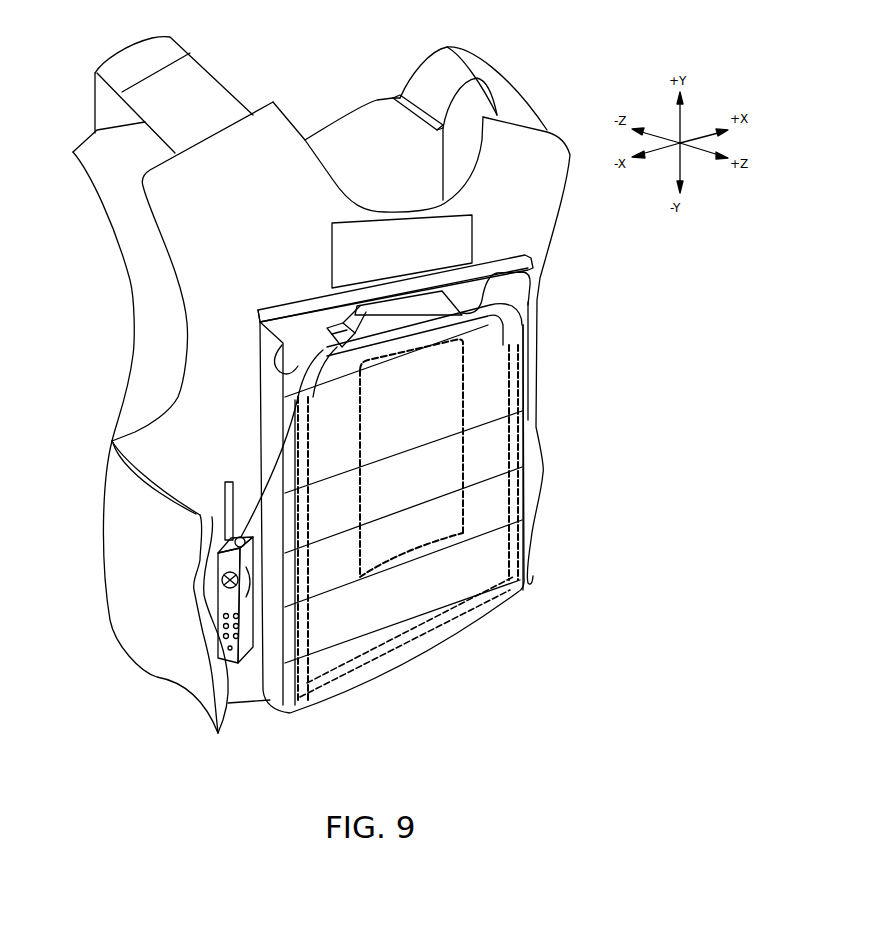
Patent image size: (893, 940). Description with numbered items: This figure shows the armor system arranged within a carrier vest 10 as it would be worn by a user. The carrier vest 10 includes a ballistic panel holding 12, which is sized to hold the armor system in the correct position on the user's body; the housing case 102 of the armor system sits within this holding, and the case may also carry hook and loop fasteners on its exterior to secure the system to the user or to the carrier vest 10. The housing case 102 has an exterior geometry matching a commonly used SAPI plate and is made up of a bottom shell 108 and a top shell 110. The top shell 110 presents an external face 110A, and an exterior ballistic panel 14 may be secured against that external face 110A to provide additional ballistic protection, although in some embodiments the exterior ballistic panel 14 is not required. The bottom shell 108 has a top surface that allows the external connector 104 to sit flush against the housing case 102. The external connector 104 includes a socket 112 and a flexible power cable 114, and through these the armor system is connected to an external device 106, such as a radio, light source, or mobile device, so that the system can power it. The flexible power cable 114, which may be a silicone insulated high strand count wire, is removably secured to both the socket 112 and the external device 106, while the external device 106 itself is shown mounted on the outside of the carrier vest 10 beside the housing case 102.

The carrier vest 10 is at (560, 135).
The ballistic panel holding 12 is at (537, 433).
The exterior ballistic panel 14 is at (452, 477).
The housing case 102 is at (530, 325).
The external connector 104 is at (418, 310).
The external device 106 is at (222, 601).
The bottom shell 108 is at (262, 344).
The top shell 110 is at (523, 255).
The external face 110A is at (537, 288).
The socket 112 is at (327, 328).
The flexible power cable 114 is at (240, 534).